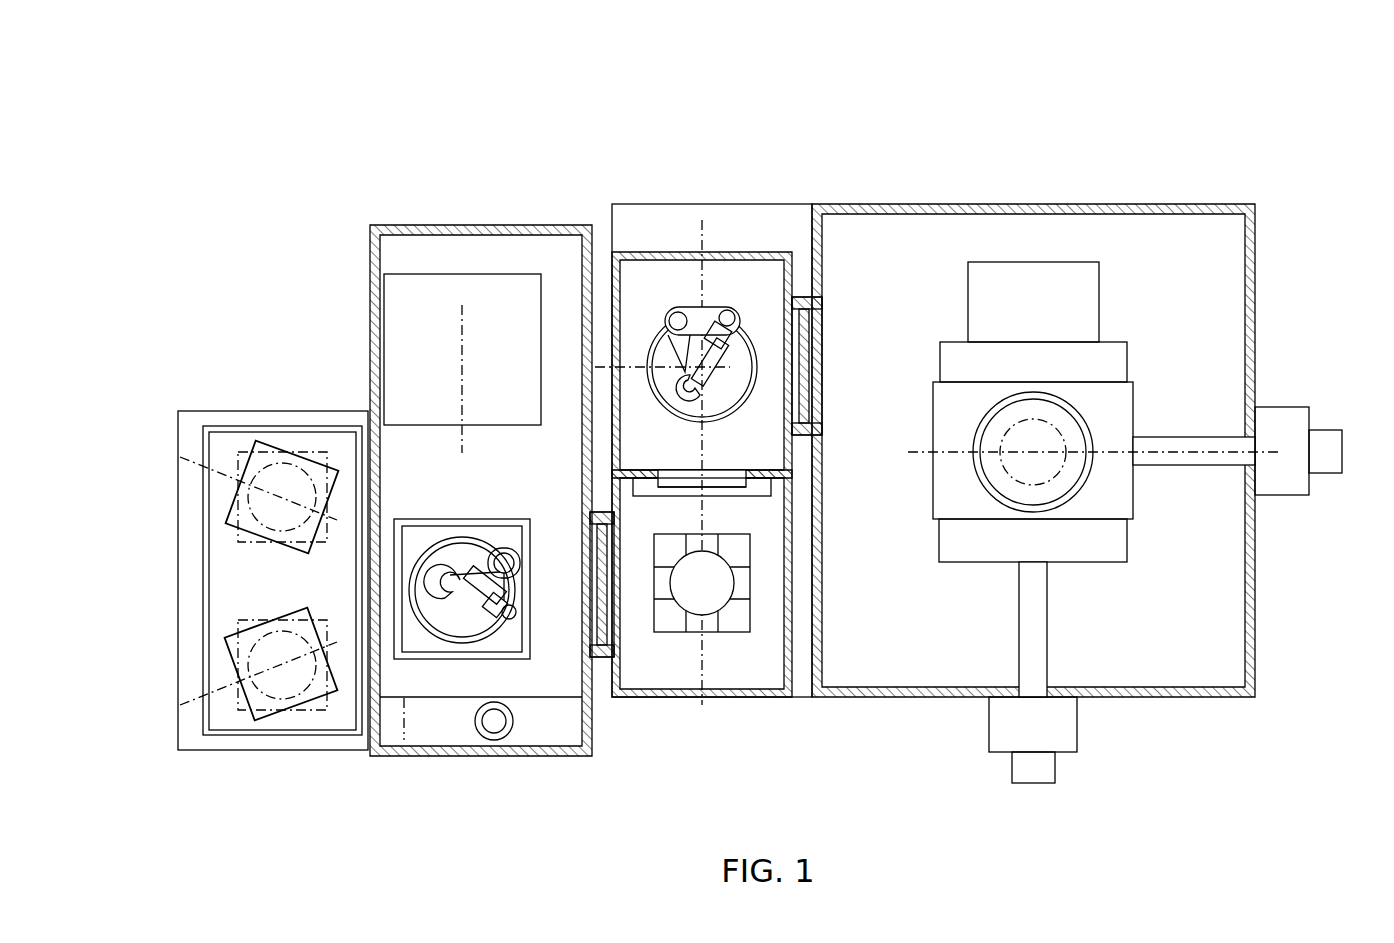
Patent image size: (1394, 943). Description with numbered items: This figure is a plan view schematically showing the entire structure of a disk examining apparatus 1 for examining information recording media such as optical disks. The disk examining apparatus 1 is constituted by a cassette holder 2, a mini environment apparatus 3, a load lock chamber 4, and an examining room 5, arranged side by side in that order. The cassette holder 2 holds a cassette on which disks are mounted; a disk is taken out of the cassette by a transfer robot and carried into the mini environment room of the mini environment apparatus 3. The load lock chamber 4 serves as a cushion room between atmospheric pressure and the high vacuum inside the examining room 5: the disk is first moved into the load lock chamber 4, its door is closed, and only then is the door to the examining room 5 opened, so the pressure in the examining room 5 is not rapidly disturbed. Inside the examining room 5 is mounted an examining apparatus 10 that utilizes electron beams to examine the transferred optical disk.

The disk examining apparatus 1 is at (1228, 104).
The cassette holder 2 is at (277, 396).
The mini environment apparatus 3 is at (482, 210).
The load lock chamber 4 is at (705, 193).
The examining room 5 is at (1036, 191).
The examining apparatus 10 is at (1155, 353).